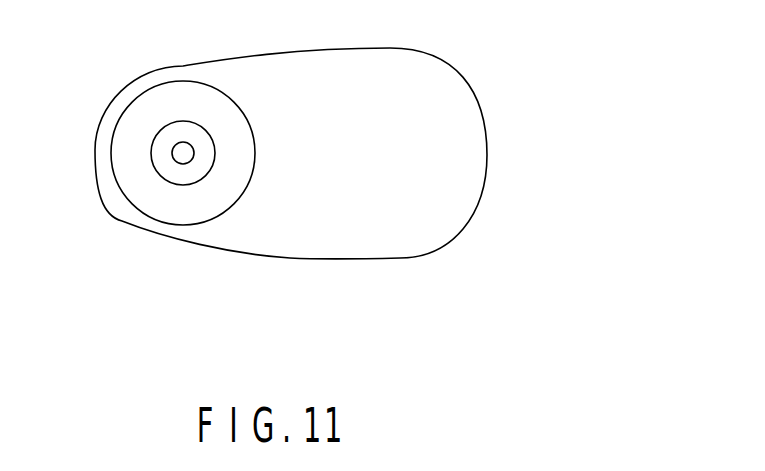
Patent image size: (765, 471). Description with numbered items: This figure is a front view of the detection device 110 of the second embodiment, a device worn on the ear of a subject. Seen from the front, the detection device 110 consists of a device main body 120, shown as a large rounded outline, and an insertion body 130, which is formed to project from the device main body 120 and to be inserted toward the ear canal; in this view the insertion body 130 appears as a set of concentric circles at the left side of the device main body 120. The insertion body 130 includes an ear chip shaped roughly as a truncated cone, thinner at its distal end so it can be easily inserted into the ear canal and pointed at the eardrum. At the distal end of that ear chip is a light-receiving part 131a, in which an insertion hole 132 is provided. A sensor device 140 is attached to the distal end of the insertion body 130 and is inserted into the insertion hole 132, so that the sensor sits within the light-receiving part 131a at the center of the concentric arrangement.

The detection device 110 is at (275, 182).
The device main body 120 is at (352, 260).
The insertion body 130 is at (195, 165).
The light-receiving part 131a is at (221, 82).
The insertion hole 132 is at (187, 150).
The sensor device 140 is at (203, 157).